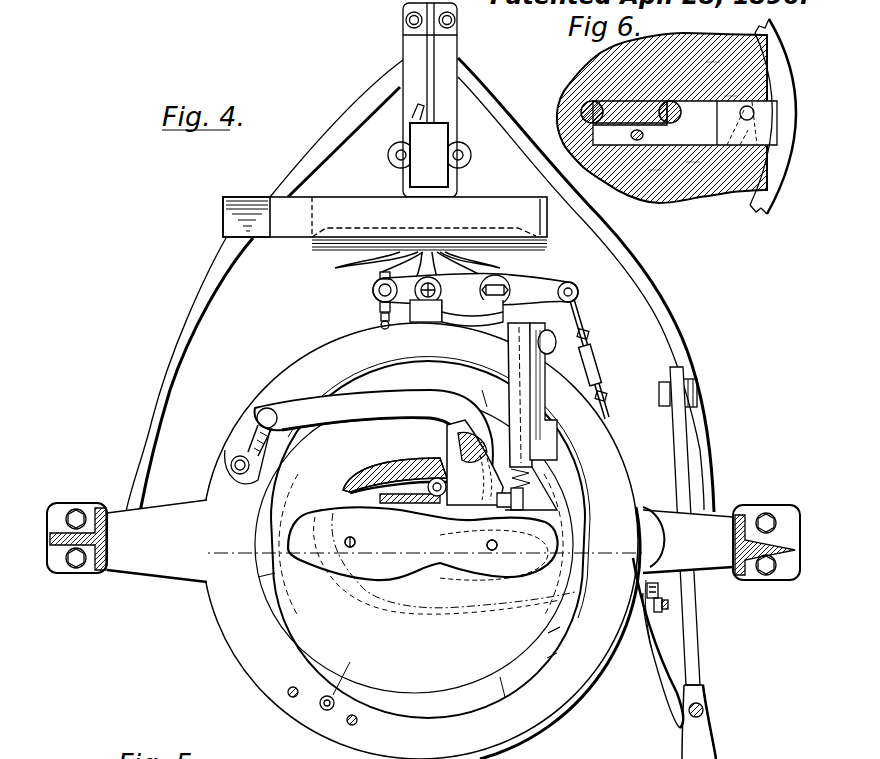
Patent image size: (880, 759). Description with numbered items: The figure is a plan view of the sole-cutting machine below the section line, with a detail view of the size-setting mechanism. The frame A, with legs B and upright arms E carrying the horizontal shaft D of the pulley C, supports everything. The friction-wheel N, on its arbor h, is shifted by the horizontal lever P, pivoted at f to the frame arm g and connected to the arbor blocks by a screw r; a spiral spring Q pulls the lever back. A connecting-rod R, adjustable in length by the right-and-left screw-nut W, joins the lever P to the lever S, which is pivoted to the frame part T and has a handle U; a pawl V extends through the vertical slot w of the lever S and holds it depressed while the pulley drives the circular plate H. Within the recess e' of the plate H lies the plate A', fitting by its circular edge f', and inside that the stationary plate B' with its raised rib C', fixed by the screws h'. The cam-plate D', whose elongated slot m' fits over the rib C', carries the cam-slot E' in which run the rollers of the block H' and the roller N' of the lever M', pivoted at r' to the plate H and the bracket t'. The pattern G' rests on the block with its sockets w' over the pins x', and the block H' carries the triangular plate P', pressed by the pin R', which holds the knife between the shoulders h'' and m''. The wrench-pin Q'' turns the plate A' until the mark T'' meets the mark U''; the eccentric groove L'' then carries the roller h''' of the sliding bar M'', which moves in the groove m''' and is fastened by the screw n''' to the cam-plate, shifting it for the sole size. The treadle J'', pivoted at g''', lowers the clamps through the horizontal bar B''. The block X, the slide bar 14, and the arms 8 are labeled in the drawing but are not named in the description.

In FIG. 4, the frame A is at (420, 285).
In FIG. 4, the legs B is at (443, 100).
In FIG. 4, the horizontal shaft D is at (426, 143).
In FIG. 4, the upright arms E is at (433, 168).
In FIG. 4, the pulley C is at (385, 208).
In FIG. 4, the end block X is at (222, 216).
In FIG. 4, the friction-wheel N is at (429, 265).
In FIG. 4, the horizontal lever P is at (475, 281).
In FIG. 4, the spiral spring Q is at (371, 300).
In FIG. 4, the screw r is at (434, 290).
In FIG. 4, the pivot f is at (487, 290).
In FIG. 4, the arm of the frame g is at (510, 304).
In FIG. 4, the arbor h is at (426, 318).
In FIG. 4, the connecting-rod R is at (598, 359).
In FIG. 4, the right-and-left screw-nut W is at (600, 364).
In FIG. 4, the slide bar 14 is at (512, 520).
In FIG. 4, the pin R' is at (564, 403).
In FIG. 4, the circular dish-shaped plate H is at (475, 541).
In FIG. 4, the circular plate A' is at (426, 533).
In FIG. 6, the circular plate A' is at (783, 116).
In FIG. 4, the block H' is at (422, 534).
In FIG. 4, the lever M' is at (374, 441).
In FIG. 4, the pivot r' is at (278, 418).
In FIG. 4, the bracket t' is at (247, 433).
In FIG. 4, the holes or sockets w' is at (348, 490).
In FIG. 4, the vertical pins x' is at (423, 538).
In FIG. 4, the cam-slot E' is at (395, 462).
In FIG. 4, the cam-plate D' is at (389, 476).
In FIG. 4, the friction-roller N' is at (425, 487).
In FIG. 4, the triangular-shaped plate P' is at (482, 463).
In FIG. 4, the circular plate B' is at (423, 583).
In FIG. 4, the iron pattern or form G' is at (426, 551).
In FIG. 4, the elongated slot m' is at (453, 560).
In FIG. 4, the arm 8 is at (698, 553).
In FIG. 4, the part of the frame T is at (665, 523).
In FIG. 4, the treadle J'' is at (698, 563).
In FIG. 4, the pivot g''' is at (700, 393).
In FIG. 4, the handle U is at (658, 643).
In FIG. 4, the lever S is at (650, 641).
In FIG. 4, the pawl V is at (628, 592).
In FIG. 4, the vertical slot w is at (667, 605).
In FIG. 4, the wrench-pin Q'' is at (323, 713).
In FIG. 4, the mark T'' is at (348, 669).
In FIG. 4, the mark U'' is at (318, 694).
In FIG. 4, the circular edge f' is at (546, 637).
In FIG. 4, the circular recess e' is at (561, 661).
In FIG. 6, the horizontal bar B'' is at (662, 118).
In FIG. 6, the raised rib portion C' is at (685, 111).
In FIG. 6, the screws h' is at (624, 102).
In FIG. 6, the shoulder h'' is at (670, 102).
In FIG. 6, the friction-roller h''' is at (749, 123).
In FIG. 6, the screw n''' is at (624, 150).
In FIG. 6, the groove m''' is at (657, 165).
In FIG. 6, the sliding bar M'' is at (692, 159).
In FIG. 6, the circular groove L'' is at (712, 59).
In FIG. 6, the shoulder m'' is at (731, 92).